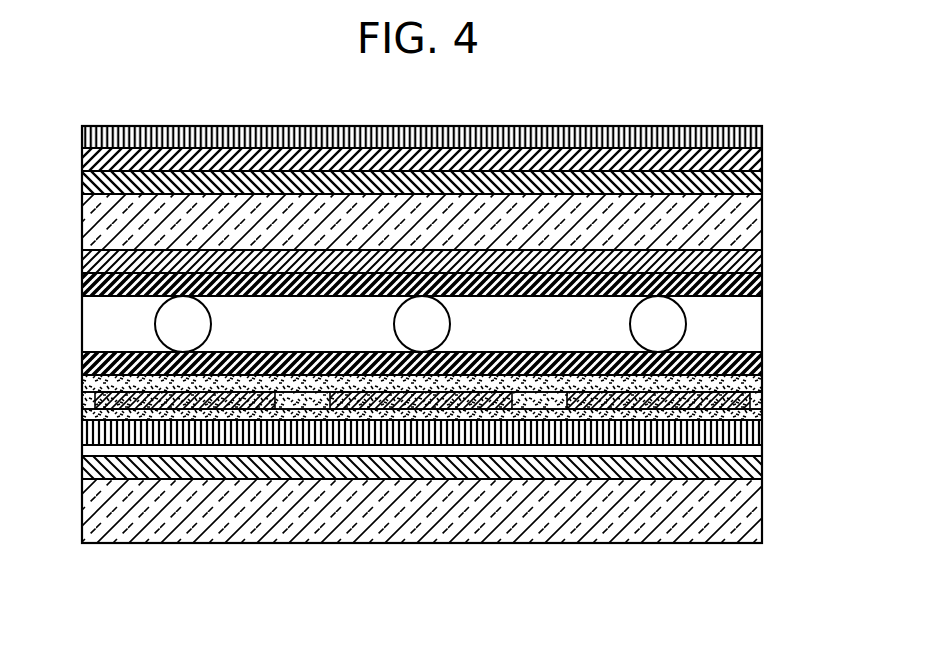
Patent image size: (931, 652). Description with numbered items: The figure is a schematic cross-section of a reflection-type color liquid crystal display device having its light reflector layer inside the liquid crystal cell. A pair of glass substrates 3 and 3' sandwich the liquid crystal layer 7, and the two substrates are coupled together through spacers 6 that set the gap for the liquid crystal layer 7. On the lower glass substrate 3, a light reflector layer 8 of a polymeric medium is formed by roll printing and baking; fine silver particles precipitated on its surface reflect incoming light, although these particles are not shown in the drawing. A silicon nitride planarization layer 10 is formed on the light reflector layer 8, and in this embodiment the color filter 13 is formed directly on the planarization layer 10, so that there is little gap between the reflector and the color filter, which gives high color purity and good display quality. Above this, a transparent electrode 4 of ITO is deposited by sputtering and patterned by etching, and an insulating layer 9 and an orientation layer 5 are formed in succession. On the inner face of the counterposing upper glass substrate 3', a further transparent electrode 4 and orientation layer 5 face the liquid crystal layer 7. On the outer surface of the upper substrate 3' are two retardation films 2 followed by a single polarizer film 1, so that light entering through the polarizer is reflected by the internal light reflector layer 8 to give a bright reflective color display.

The polarizer film 1 is at (762, 132).
The retardation film 2 is at (762, 159).
The counterposing glass substrate 3' is at (451, 222).
The glass substrate 3 is at (422, 536).
The transparent electrode 4 is at (762, 259).
The orientation layer 5 is at (762, 286).
The spacer 6 is at (672, 320).
The liquid crystal layer 7 is at (748, 332).
The light reflector layer 8 is at (733, 478).
The insulating layer 9 is at (762, 385).
The planarization layer 10 is at (762, 456).
The color filter 13 is at (762, 440).